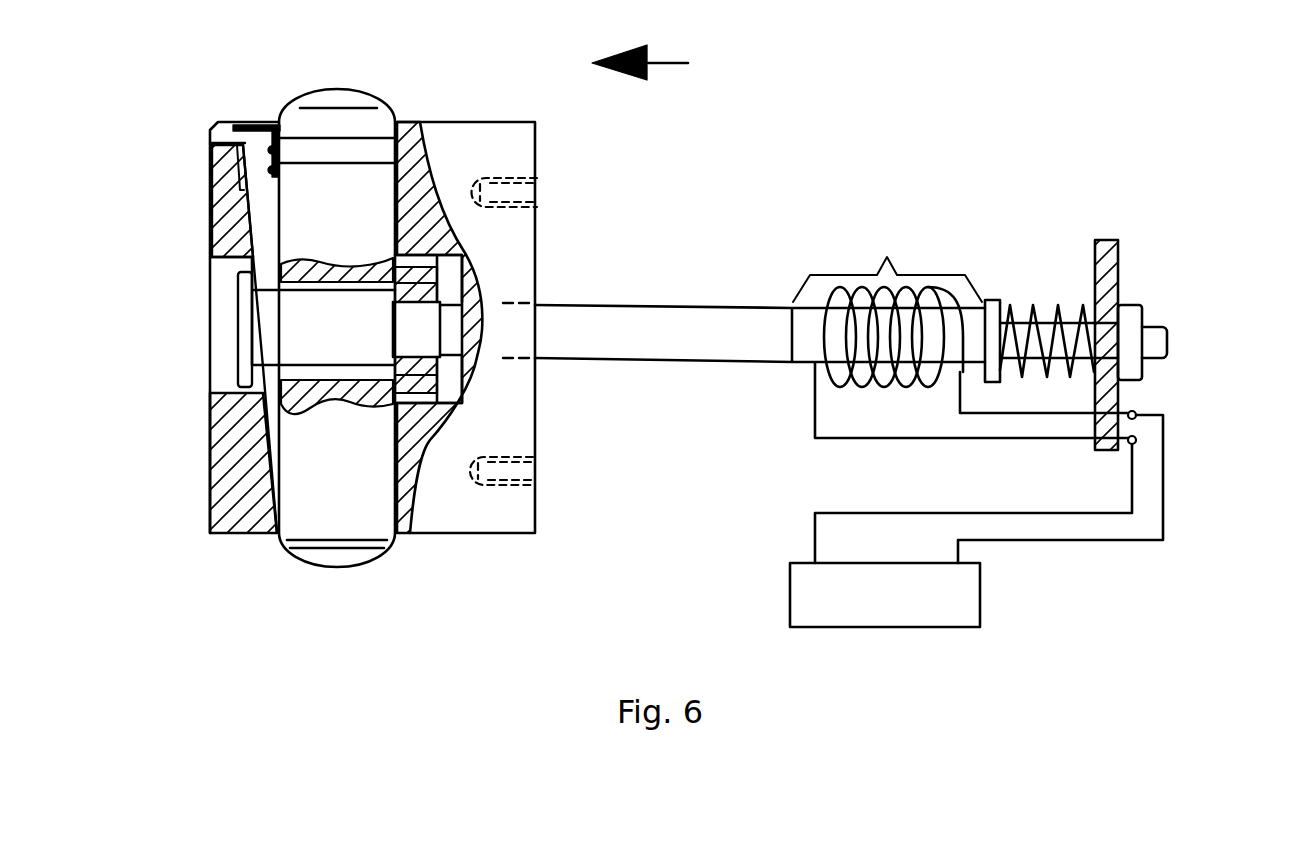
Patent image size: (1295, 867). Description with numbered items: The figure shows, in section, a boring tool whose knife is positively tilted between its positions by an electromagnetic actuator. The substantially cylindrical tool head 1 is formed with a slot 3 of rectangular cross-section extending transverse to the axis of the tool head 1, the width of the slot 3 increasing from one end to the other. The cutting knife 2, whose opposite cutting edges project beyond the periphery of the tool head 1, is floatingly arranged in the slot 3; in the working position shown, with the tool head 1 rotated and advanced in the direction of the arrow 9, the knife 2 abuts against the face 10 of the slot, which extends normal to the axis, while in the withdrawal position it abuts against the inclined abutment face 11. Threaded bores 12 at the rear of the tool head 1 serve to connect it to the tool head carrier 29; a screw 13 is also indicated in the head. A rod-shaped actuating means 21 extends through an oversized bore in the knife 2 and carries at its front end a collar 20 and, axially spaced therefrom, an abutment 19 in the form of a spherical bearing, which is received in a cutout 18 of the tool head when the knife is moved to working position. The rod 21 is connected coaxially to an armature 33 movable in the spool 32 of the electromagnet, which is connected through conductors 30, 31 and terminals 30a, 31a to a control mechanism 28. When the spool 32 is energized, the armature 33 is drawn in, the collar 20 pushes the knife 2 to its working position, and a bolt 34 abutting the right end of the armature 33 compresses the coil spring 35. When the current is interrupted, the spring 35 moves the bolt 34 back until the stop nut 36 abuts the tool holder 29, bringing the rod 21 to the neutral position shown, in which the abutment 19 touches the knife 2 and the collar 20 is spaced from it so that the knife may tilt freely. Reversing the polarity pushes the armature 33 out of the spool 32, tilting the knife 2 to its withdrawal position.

The tool head 1 is at (492, 152).
The cutting knife 2 is at (347, 130).
The slot 3 is at (262, 220).
The arrow 9 is at (653, 63).
The face of the slot 10 is at (420, 157).
The abutment face 11 is at (267, 440).
The threaded bores 12 is at (517, 190).
The screw 13 is at (267, 120).
The cutout 18 is at (450, 378).
The abutment 19 is at (437, 396).
The collar 20 is at (247, 312).
The rod-shaped actuating means 21 is at (667, 332).
The control mechanism 28 is at (937, 583).
The tool head carrier 29 is at (1105, 252).
The conductor 30 is at (1162, 527).
The terminal 30a is at (1136, 413).
The conductor 31 is at (1130, 485).
The terminal 31a is at (1136, 442).
The spool 32 is at (920, 290).
The armature 33 is at (887, 287).
The bolt 34 is at (990, 308).
The coil spring 35 is at (1033, 308).
The stop nut 36 is at (1128, 315).